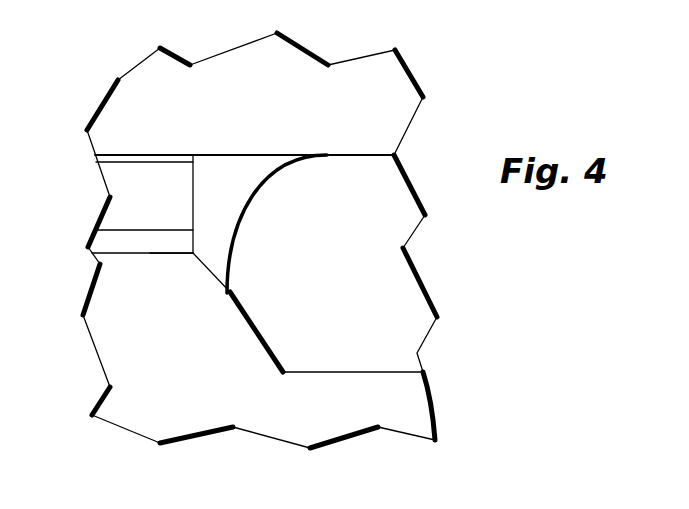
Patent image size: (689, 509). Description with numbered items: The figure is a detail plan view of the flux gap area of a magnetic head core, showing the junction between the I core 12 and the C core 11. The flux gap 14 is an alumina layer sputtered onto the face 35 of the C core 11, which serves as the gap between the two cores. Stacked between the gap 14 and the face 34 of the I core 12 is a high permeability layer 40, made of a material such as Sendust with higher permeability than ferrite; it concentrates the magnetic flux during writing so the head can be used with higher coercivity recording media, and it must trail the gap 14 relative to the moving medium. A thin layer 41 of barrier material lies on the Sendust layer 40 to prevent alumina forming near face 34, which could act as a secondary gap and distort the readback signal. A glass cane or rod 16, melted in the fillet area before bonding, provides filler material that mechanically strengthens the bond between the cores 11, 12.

The I core 12 is at (160, 70).
The C core 11 is at (340, 413).
The face of I core 34 is at (168, 156).
The layer of barrier material 41 is at (117, 162).
The high permeability layer 40 is at (127, 195).
The flux gap 14 is at (107, 238).
The face of C bar 35 is at (150, 254).
The glass cane or rod 16 is at (242, 200).